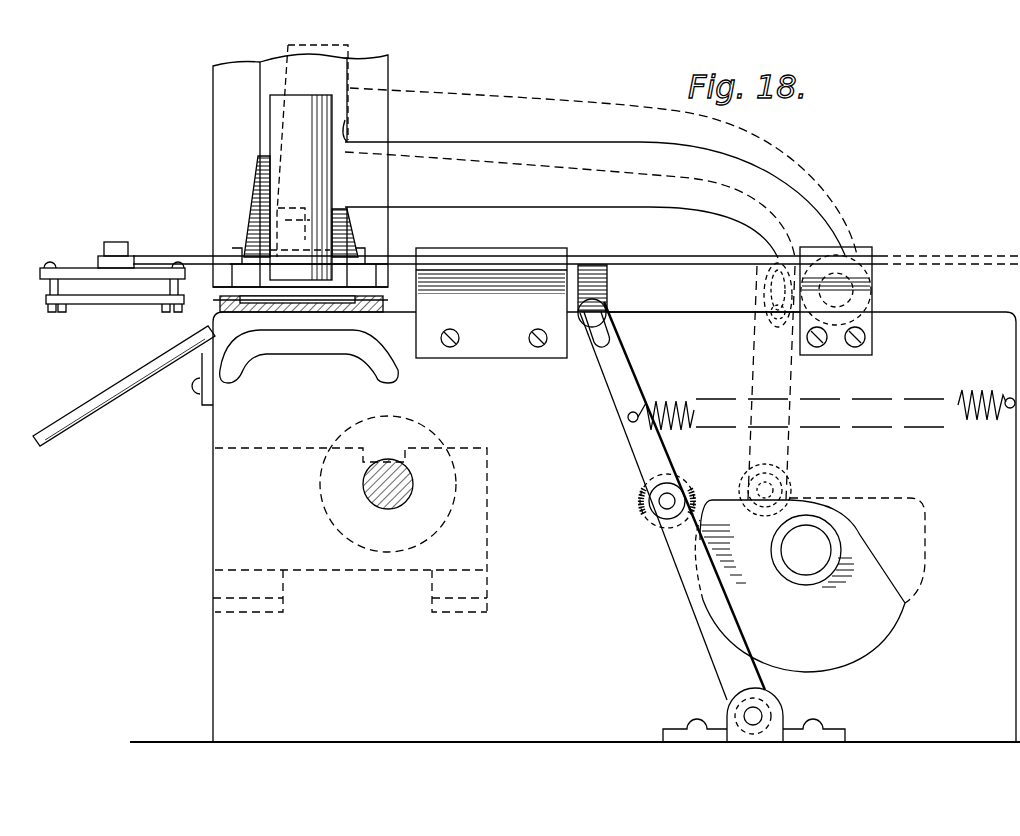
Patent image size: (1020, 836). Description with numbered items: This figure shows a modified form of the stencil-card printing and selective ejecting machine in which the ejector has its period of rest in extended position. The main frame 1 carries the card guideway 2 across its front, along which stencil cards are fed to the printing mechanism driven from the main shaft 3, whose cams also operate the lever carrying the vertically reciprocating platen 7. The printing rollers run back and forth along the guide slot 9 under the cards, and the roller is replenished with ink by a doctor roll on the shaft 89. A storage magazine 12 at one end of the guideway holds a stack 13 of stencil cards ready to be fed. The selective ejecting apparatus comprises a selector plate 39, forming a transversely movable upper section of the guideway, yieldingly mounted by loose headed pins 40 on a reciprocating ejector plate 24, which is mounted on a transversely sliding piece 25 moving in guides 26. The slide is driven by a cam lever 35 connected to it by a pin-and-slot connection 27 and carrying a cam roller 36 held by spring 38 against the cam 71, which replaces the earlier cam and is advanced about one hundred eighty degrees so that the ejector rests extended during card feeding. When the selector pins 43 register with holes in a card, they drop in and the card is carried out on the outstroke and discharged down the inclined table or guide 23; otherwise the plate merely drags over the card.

The main frame 1 is at (213, 437).
The card guideway 2 is at (383, 297).
The main shaft 3 is at (808, 546).
The platen 7 is at (345, 257).
The guide slot 9 is at (350, 348).
The storage magazine 12 is at (380, 124).
The stack of stencil cards 13 is at (258, 168).
The inclined table or guide 23 is at (125, 393).
The ejector plate 24 is at (74, 268).
The transversely sliding piece 25 is at (672, 252).
The guides 26 is at (505, 350).
The pin-and-slot connection 27 is at (607, 314).
The cam lever 35 is at (645, 404).
The cam roller 36 is at (683, 494).
The spring 38 is at (982, 398).
The selector plate 39 is at (130, 296).
The loose headed pins 40 is at (52, 288).
The selector pins 43 is at (60, 306).
The cam 71 is at (890, 632).
The doctor roll shaft 89 is at (405, 462).